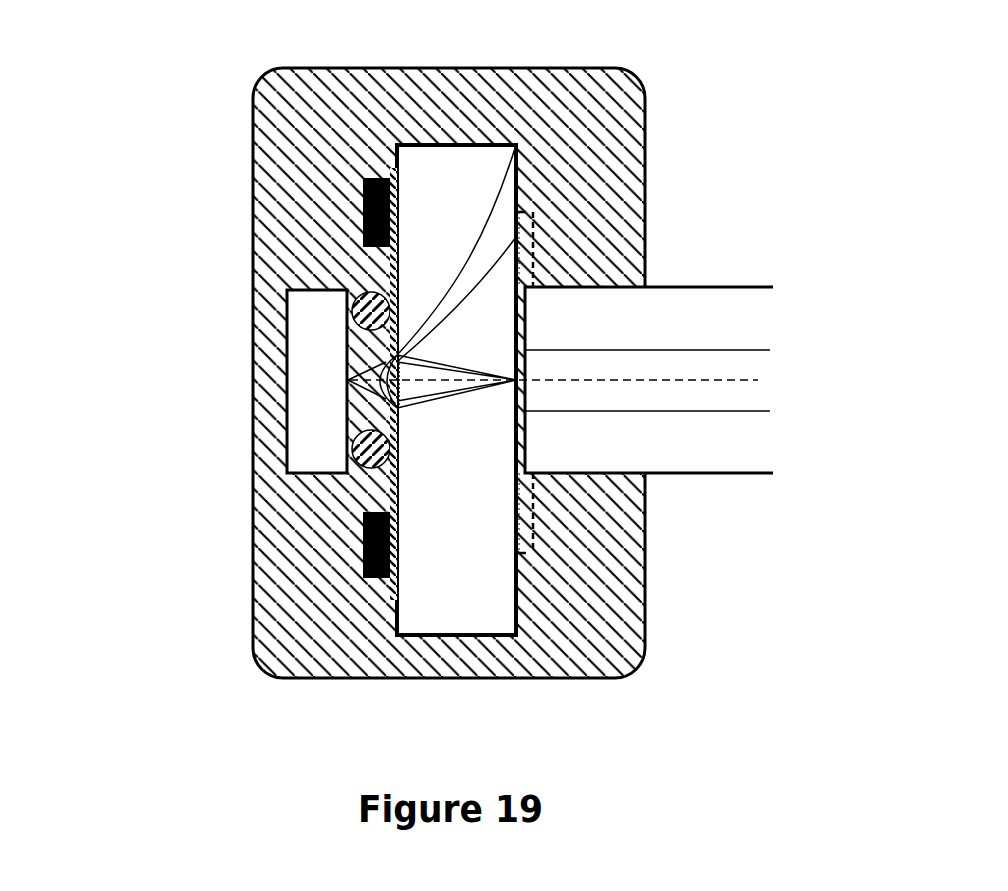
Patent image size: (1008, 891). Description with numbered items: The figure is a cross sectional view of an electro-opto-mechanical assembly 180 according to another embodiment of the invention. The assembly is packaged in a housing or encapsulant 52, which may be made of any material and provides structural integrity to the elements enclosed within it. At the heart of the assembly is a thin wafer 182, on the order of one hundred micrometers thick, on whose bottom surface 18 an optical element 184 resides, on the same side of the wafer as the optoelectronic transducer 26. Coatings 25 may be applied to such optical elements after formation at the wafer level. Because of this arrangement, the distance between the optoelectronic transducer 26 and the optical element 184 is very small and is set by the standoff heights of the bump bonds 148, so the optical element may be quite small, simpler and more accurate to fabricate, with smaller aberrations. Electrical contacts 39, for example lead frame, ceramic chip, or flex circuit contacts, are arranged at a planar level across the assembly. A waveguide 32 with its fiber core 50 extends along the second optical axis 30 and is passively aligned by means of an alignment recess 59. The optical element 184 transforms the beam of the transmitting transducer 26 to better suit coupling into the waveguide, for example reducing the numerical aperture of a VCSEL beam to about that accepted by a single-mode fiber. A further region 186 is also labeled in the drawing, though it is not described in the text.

The electro-opto-mechanical assembly 180 is at (148, 209).
The housing or encapsulant 52 is at (365, 90).
The coatings 25 is at (516, 145).
The optical element 184 is at (516, 237).
The contacts 39 is at (363, 211).
The bump bonds 148 is at (367, 292).
The optoelectronic transducer 26 is at (305, 343).
The bottom surface 18 is at (395, 617).
The wafer 182 is at (448, 610).
The bore wall 186 is at (530, 612).
The alignment recess 59 is at (525, 517).
The waveguide 32 is at (712, 475).
The fiber core 50 is at (850, 352).
The second optical axis 30 is at (740, 380).